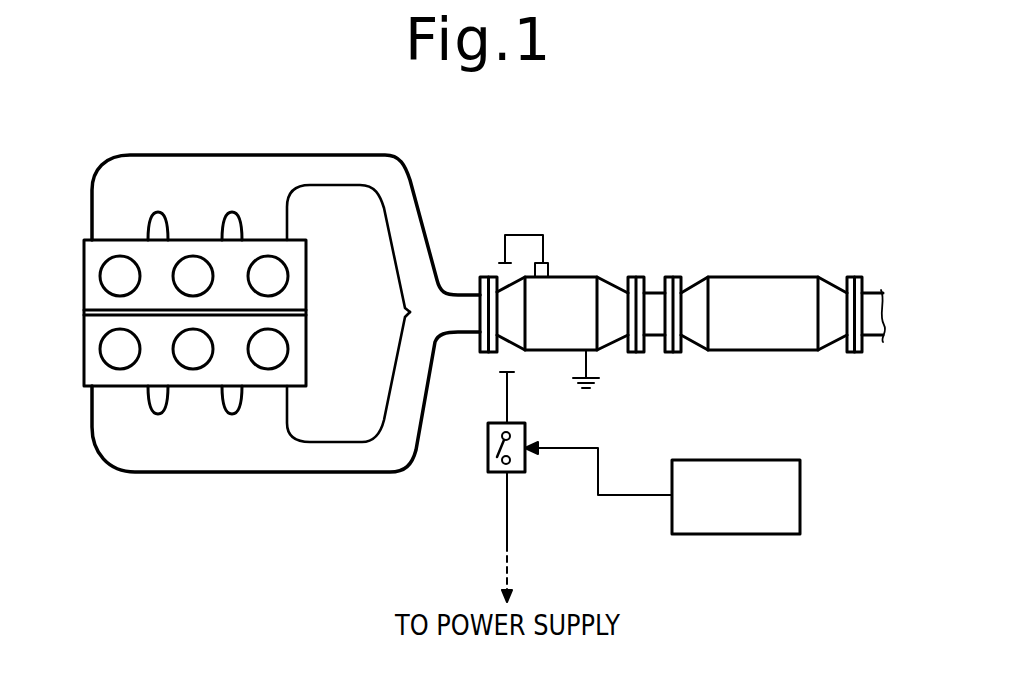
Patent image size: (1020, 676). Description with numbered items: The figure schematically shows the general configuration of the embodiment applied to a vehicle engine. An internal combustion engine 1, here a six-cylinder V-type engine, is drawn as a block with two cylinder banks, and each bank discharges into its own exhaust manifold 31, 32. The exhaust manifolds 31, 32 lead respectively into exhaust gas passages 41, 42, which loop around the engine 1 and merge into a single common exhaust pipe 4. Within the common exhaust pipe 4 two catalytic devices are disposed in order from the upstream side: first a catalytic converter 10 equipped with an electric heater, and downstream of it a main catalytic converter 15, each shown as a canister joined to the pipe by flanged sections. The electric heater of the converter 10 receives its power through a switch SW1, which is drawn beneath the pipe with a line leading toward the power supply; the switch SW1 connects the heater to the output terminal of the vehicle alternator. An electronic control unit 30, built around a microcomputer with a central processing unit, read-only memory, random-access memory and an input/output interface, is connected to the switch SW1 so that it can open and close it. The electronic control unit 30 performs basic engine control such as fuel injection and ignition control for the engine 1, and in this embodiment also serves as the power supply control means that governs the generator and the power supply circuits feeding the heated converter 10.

The internal combustion engine 1 is at (82, 342).
The exhaust manifold 31 is at (135, 165).
The exhaust manifold 32 is at (145, 457).
The exhaust gas passage 41 is at (416, 210).
The exhaust gas passage 42 is at (398, 455).
The common exhaust pipe 4 is at (458, 303).
The catalytic converter equipped with an electric heater 10 is at (580, 275).
The main catalytic converter 15 is at (720, 277).
The switch SW1 is at (527, 432).
The electronic control unit (ECU) 30 is at (800, 500).